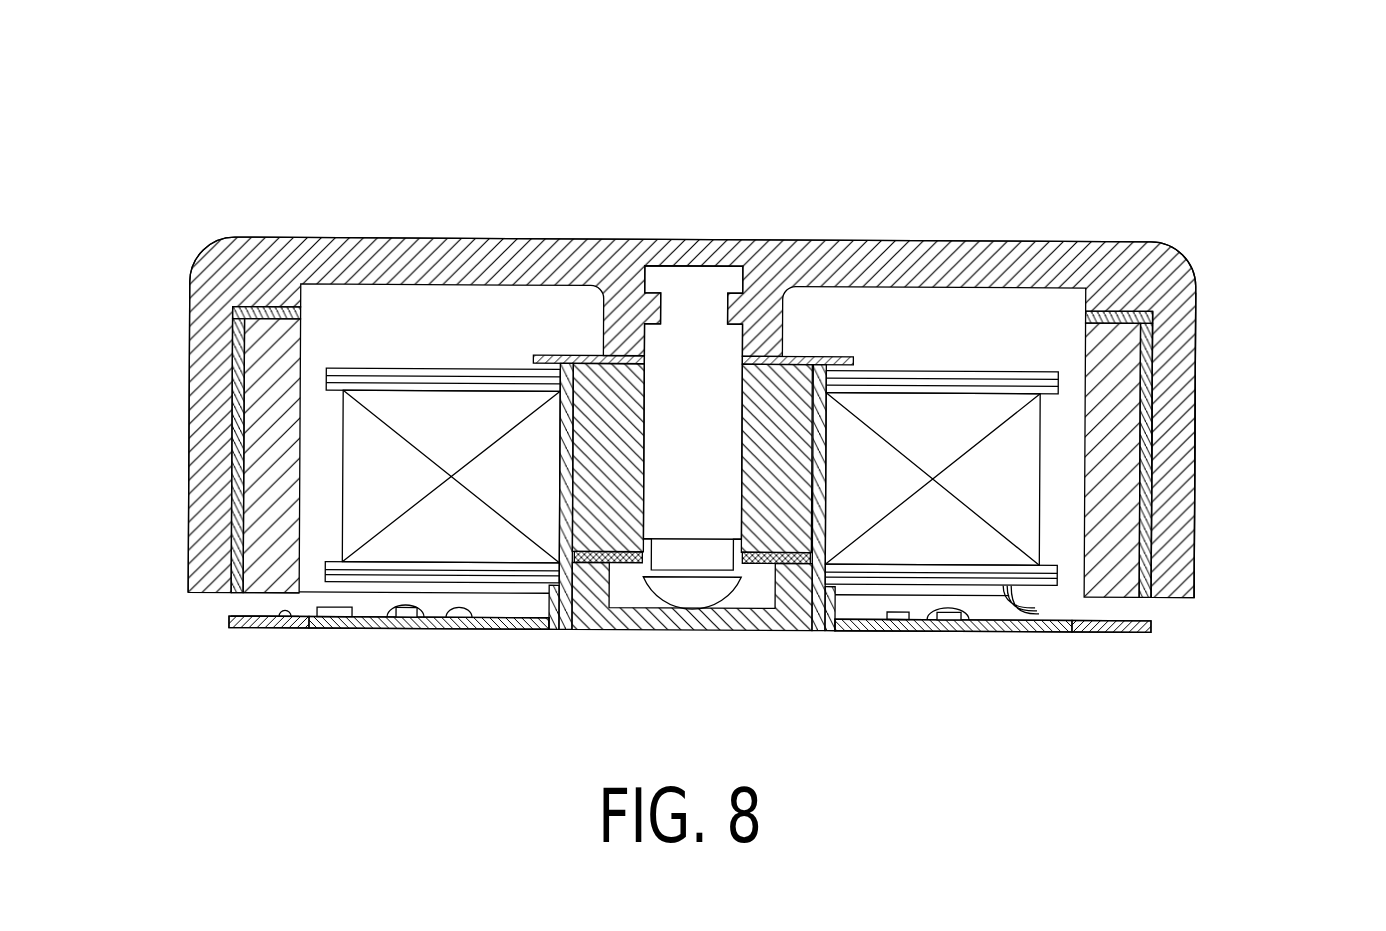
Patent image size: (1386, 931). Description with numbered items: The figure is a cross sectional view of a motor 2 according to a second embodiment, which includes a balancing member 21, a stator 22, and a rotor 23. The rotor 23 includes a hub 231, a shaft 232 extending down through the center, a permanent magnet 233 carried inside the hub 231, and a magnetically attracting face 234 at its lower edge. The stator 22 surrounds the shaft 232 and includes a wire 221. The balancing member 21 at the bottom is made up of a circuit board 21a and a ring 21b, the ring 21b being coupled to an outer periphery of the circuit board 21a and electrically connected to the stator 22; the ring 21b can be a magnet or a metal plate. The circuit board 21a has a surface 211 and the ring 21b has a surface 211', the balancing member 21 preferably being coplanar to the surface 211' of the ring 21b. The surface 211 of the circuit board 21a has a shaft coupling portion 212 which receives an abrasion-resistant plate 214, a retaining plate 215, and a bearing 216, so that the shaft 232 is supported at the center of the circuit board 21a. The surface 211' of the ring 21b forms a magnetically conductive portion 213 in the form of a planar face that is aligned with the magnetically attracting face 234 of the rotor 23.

The motor 2 is at (209, 188).
The balancing member 21 is at (1150, 750).
The circuit board 21a is at (1030, 630).
The ring 21b is at (1107, 630).
The surface 211 is at (643, 666).
The surface 211' is at (304, 667).
The shaft coupling portion 212 is at (567, 483).
The magnetically conductive portion 213 is at (252, 611).
The abrasion-resistant plate 214 is at (790, 622).
The retaining plate 215 is at (621, 565).
The bearing 216 is at (590, 378).
The stator 22 is at (1010, 376).
The wire 221 is at (1013, 627).
The rotor 23 is at (883, 253).
The hub 231 is at (1196, 395).
The shaft 232 is at (697, 363).
The permanent magnet 233 is at (272, 340).
The magnetically attracting face 234 is at (252, 593).